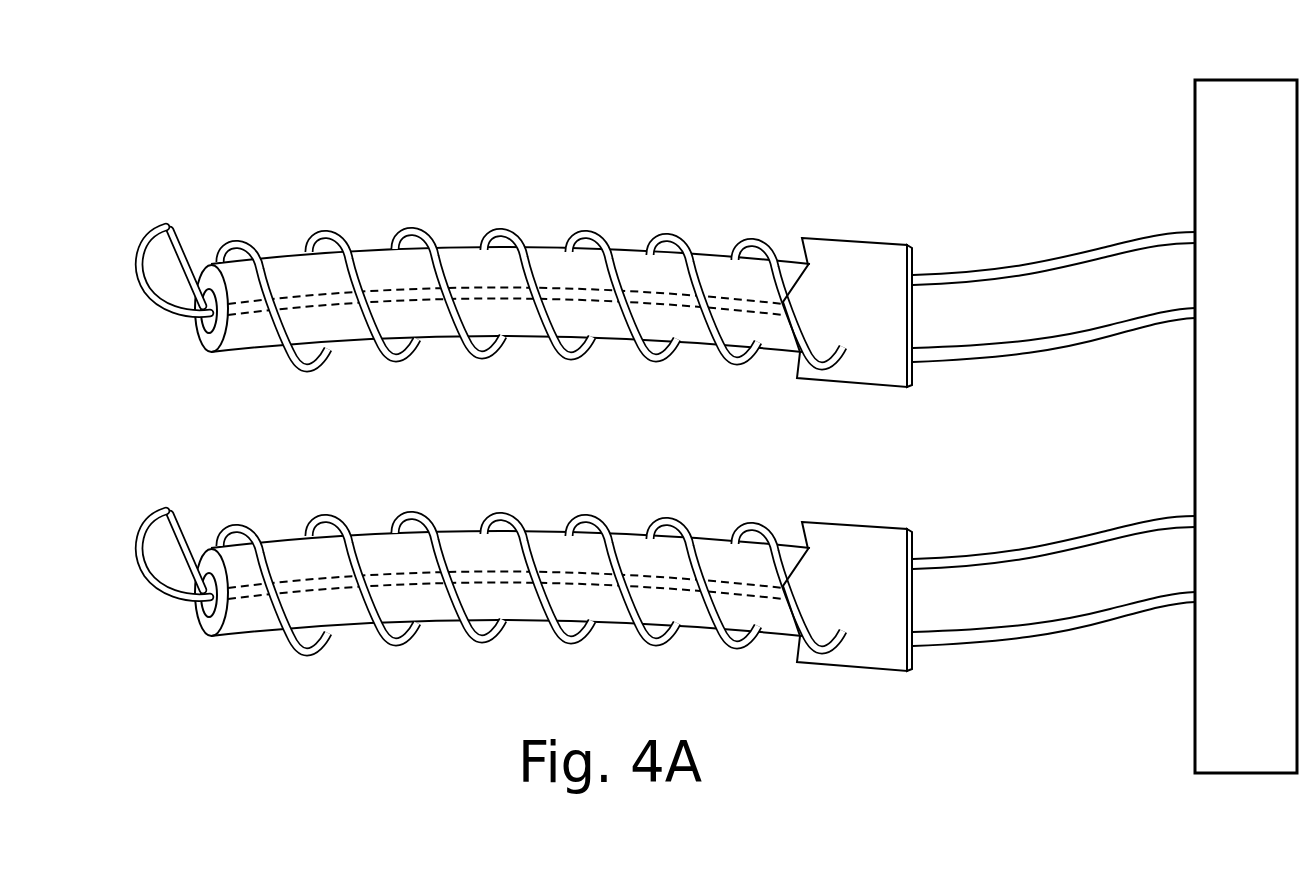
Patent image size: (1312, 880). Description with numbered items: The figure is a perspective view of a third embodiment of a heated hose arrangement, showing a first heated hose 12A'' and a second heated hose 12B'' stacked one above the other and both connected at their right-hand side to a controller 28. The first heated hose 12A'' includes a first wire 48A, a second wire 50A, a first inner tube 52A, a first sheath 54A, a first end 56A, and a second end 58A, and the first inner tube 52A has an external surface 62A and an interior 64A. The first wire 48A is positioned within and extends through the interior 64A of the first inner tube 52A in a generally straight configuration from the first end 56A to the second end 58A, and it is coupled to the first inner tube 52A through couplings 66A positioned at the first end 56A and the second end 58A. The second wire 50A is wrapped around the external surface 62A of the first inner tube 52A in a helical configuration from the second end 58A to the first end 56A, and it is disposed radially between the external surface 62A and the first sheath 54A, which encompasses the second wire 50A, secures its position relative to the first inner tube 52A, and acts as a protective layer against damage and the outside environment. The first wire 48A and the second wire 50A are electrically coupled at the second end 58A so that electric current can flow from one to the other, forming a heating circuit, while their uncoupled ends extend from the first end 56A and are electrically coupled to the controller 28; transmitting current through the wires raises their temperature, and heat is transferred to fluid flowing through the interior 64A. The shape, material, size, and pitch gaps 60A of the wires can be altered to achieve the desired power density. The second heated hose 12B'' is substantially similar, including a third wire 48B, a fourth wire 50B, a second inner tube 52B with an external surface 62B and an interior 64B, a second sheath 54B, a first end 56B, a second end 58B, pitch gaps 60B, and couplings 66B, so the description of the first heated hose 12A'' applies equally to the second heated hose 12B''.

The first heated hose 12A'' is at (468, 238).
The second heated hose 12B'' is at (466, 578).
The controller 28 is at (1263, 424).
The first wire 48A is at (1087, 258).
The third wire 48B is at (1087, 542).
The second wire 50A is at (1055, 343).
The fourth wire 50B is at (1055, 627).
The first inner tube 52A is at (550, 270).
The second inner tube 52B is at (547, 557).
The first sheath 54A is at (837, 265).
The second sheath 54B is at (825, 543).
The first end 56A is at (843, 387).
The first end 56B is at (843, 672).
The second end 58A is at (208, 358).
The second end 58B is at (250, 642).
The pitch gaps 60A is at (463, 265).
The pitch gaps 60B is at (462, 543).
The external surface 62A is at (293, 268).
The external surface 62B is at (280, 492).
The interior 64A is at (203, 318).
The interior 64B is at (197, 603).
The couplings 66A is at (922, 317).
The couplings 66B is at (922, 601).